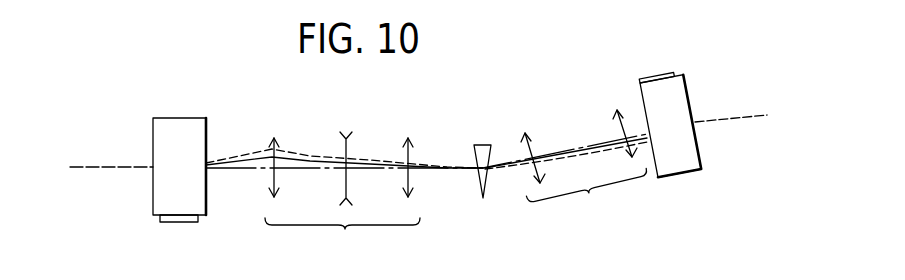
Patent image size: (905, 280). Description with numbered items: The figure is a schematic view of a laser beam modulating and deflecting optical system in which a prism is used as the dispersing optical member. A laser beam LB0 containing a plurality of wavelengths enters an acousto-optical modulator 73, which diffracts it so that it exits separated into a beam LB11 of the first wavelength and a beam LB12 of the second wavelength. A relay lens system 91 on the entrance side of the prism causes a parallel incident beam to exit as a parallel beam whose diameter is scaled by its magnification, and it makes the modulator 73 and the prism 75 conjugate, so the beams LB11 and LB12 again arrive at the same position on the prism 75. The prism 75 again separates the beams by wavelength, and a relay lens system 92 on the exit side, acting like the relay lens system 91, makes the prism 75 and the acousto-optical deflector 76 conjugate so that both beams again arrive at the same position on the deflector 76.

The acousto-optical modulator 73 is at (183, 123).
The laser beam LB0 is at (112, 168).
The laser beam of first wavelength LB11 is at (237, 162).
The laser beam of second wavelength LB12 is at (243, 152).
The relay lens system 91 is at (342, 198).
The prism 75 is at (482, 144).
The relay lens system 92 is at (585, 173).
The acousto-optical deflector 76 is at (641, 95).